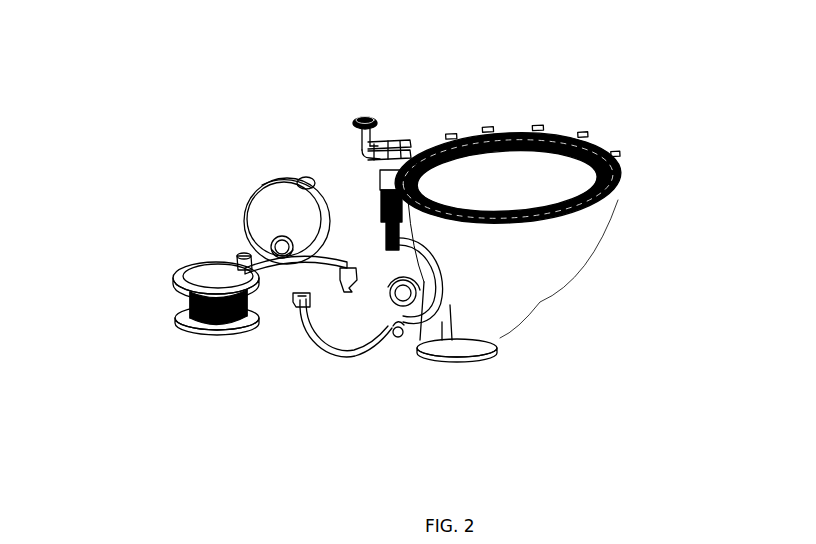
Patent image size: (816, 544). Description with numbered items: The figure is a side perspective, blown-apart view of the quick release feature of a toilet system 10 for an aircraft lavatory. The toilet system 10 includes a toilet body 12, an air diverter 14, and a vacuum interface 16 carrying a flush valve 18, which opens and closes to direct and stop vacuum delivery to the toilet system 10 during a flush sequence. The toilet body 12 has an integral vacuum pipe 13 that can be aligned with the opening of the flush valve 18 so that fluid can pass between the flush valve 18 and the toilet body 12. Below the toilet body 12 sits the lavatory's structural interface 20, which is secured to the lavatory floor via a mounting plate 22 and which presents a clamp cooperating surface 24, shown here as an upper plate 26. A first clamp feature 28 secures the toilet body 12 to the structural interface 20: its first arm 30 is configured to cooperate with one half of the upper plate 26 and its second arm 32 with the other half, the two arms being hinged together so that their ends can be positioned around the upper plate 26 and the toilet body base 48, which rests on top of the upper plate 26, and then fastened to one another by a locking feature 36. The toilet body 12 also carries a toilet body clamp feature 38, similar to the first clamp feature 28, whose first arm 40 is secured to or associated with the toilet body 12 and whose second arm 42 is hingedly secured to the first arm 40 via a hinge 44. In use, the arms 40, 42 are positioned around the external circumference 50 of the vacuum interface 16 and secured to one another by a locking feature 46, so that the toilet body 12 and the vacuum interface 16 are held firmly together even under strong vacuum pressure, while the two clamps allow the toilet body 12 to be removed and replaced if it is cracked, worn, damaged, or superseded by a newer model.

The toilet system 10 is at (614, 93).
The toilet body 12 is at (540, 271).
The integral vacuum pipe 13 is at (401, 293).
The air diverter 14 is at (615, 173).
The vacuum interface 16 is at (268, 208).
The flush valve 18 is at (278, 245).
The structural interface 20 is at (158, 317).
The mounting plate 22 is at (220, 330).
The clamp cooperating surface 24 is at (173, 265).
The upper plate 26 is at (257, 293).
The first clamp feature 28 is at (349, 250).
The first arm 30 is at (176, 284).
The second arm 32 is at (346, 260).
The locking feature 36 is at (344, 290).
The toilet body clamp feature 38 is at (397, 363).
The first arm 40 is at (437, 292).
The second arm 42 is at (325, 350).
The hinge 44 is at (402, 334).
The locking feature 46 is at (299, 305).
The toilet body base 48 is at (488, 352).
The external circumference 50 is at (278, 178).